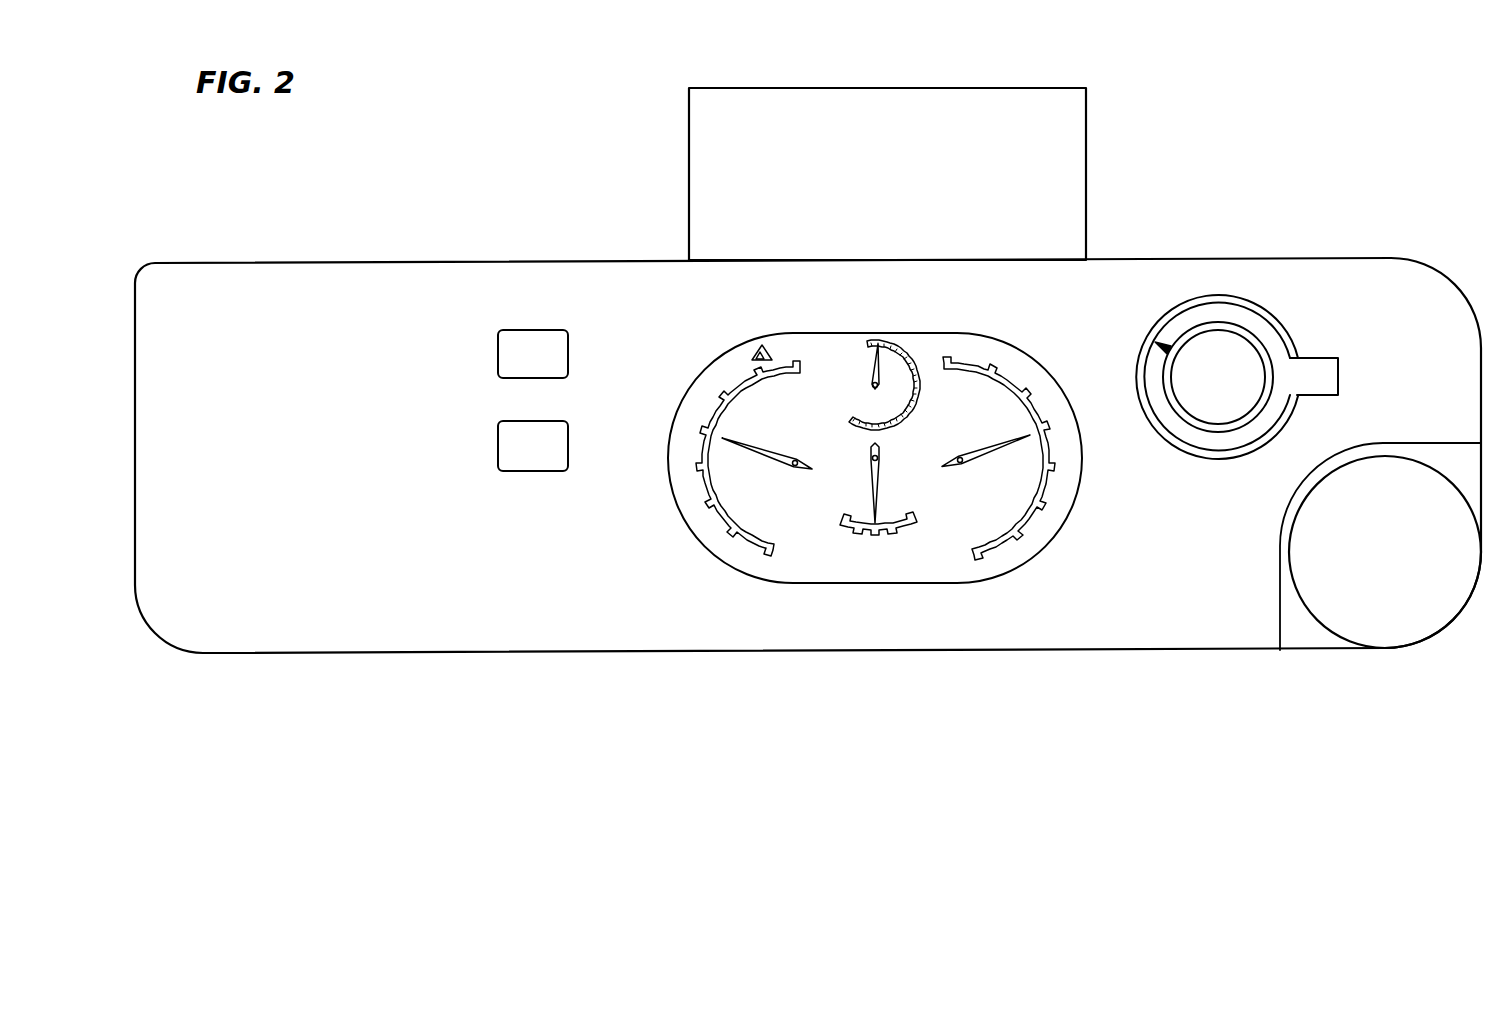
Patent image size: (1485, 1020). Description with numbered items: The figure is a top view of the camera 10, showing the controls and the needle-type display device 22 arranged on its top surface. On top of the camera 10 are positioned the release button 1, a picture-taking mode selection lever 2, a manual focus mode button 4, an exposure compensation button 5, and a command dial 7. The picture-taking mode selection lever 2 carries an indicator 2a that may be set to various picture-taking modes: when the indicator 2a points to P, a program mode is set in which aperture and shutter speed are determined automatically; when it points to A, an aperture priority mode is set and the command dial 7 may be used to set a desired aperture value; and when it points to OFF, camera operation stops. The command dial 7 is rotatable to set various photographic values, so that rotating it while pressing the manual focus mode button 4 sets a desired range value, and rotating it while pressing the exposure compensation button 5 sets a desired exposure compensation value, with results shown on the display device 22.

The camera 10 is at (1393, 213).
The release button 1 is at (1240, 353).
The picture-taking mode selection lever 2 is at (1318, 358).
The indicator 2a is at (1195, 296).
The manual focus mode button 4 is at (525, 358).
The exposure compensation button 5 is at (518, 447).
The command dial 7 is at (1393, 598).
The display device 22 is at (878, 585).